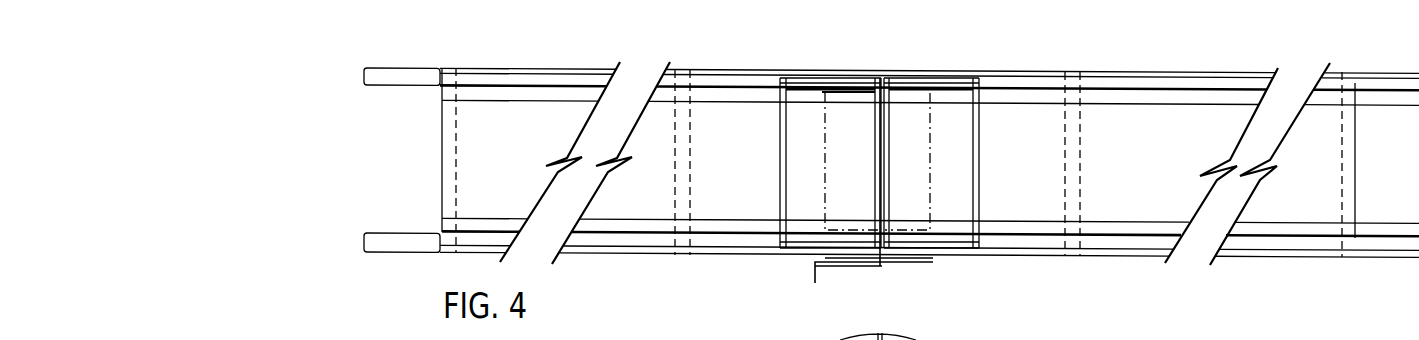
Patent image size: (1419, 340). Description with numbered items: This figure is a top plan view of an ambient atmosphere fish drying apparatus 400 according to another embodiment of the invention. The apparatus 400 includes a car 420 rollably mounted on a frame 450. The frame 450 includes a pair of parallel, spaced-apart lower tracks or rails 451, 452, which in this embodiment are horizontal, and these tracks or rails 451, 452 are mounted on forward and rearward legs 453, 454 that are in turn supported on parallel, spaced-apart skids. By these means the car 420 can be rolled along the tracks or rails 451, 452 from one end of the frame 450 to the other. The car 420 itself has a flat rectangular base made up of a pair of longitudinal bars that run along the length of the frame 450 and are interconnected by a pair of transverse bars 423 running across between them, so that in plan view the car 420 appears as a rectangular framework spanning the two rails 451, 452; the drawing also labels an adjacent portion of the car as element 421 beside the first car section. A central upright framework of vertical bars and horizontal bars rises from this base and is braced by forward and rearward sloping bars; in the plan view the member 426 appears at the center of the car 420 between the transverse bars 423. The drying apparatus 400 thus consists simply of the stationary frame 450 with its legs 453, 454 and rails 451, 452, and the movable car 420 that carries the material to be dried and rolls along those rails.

The ambient atmosphere fish drying apparatus 400 is at (836, 66).
The car 420 is at (774, 119).
The second panel 421 is at (972, 156).
The transverse bars 423 is at (930, 80).
The center post 426 is at (883, 195).
The frame 450 is at (1120, 132).
The lower track or rail 451 is at (1142, 250).
The lower track or rail 452 is at (1226, 80).
The forward legs 453 is at (1360, 76).
The rearward legs 454 is at (455, 68).